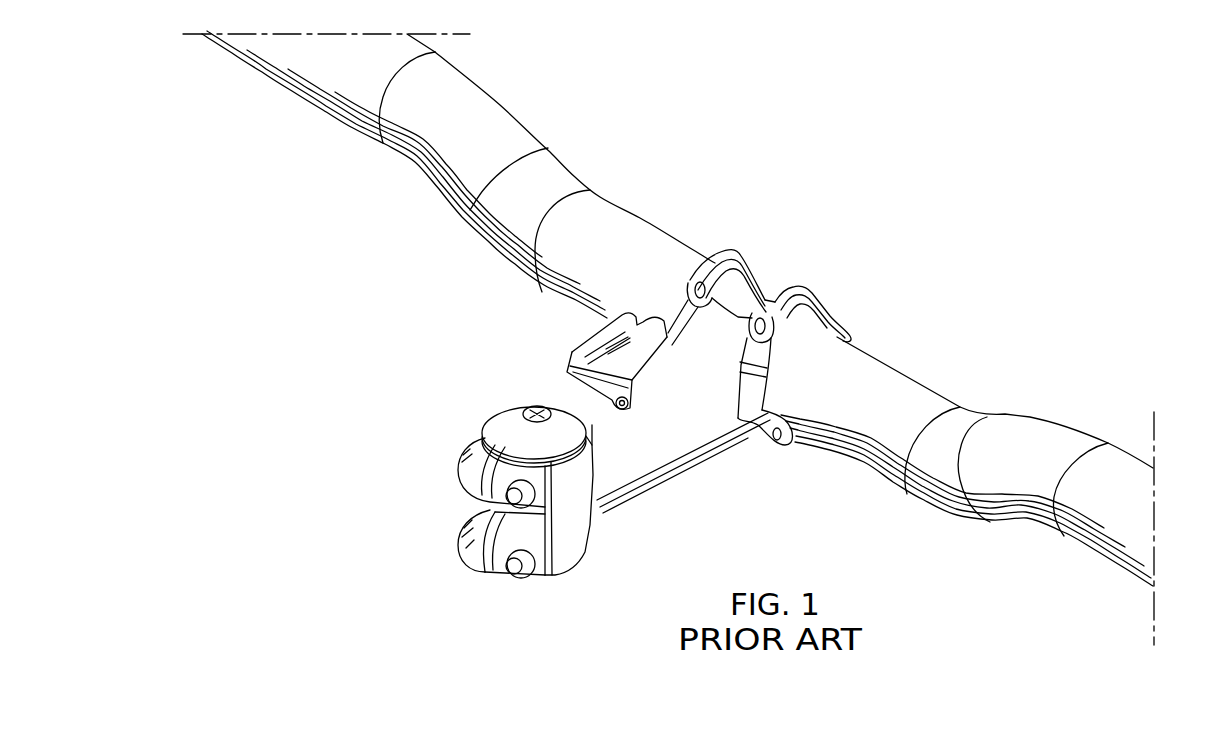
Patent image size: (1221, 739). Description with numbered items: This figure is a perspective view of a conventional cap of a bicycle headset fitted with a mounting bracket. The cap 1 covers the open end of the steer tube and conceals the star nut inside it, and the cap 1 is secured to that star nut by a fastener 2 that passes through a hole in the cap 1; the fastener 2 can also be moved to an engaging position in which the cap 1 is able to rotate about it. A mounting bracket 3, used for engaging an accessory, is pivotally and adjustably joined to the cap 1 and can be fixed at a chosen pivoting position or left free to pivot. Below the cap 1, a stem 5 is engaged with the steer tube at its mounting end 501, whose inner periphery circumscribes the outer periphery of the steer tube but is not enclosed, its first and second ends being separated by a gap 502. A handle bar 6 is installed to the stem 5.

The cap 1 is at (483, 423).
The fastener 2 is at (520, 405).
The mounting bracket 3 is at (570, 337).
The stem 5 is at (536, 505).
The mounting end 501 is at (573, 485).
The gap 502 is at (476, 475).
The handle bar 6 is at (662, 218).